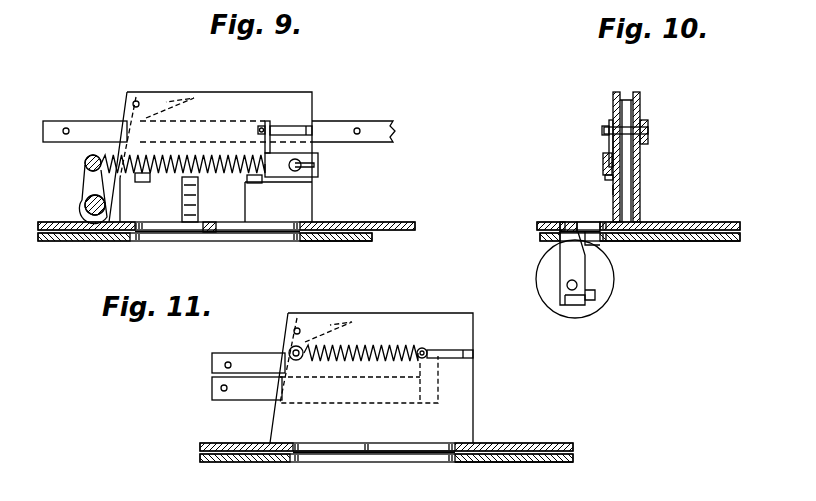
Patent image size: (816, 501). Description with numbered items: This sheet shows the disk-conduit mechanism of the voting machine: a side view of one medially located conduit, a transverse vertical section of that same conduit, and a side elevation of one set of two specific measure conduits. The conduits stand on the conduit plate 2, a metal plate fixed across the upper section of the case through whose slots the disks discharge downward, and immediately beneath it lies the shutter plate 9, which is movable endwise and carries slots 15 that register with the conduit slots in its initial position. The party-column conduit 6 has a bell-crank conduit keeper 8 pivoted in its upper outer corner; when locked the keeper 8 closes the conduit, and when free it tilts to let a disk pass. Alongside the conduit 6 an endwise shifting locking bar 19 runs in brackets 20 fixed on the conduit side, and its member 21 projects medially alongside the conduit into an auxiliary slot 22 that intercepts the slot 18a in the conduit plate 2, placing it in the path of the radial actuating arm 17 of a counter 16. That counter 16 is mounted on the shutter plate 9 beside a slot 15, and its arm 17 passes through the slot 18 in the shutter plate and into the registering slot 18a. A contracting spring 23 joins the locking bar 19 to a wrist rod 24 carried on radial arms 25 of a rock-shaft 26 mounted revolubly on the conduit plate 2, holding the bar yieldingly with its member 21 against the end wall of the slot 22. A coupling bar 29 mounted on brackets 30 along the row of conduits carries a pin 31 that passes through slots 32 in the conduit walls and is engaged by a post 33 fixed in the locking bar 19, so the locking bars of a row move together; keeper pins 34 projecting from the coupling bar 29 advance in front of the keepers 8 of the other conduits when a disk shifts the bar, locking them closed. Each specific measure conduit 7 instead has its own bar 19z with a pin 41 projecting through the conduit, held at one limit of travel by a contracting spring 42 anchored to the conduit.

In FIG. 9, the conduit plate 2 is at (360, 222).
In FIG. 10, the conduit plate 2 is at (686, 222).
In FIG. 11, the conduit plate 2 is at (520, 443).
In FIG. 9, the conduit 6 is at (222, 98).
In FIG. 10, the conduit 6 is at (614, 92).
In FIG. 11, the conduit 6 is at (428, 443).
In FIG. 11, the specific measure conduit 7 is at (430, 313).
In FIG. 9, the conduit keeper 8 is at (163, 97).
In FIG. 11, the conduit keeper 8 is at (331, 322).
In FIG. 9, the shutter plate 9 is at (355, 242).
In FIG. 10, the shutter plate 9 is at (698, 242).
In FIG. 11, the shutter plate 9 is at (553, 462).
In FIG. 9, the slot 15 is at (273, 241).
In FIG. 10, the slot 15 is at (622, 240).
In FIG. 11, the slot 15 is at (428, 462).
In FIG. 10, the counter 16 is at (540, 280).
In FIG. 10, the radial actuating arm 17 is at (577, 263).
In FIG. 10, the slot 18 is at (605, 235).
In FIG. 9, the slot 18a is at (208, 234).
In FIG. 10, the slot 18a is at (580, 222).
In FIG. 9, the locking bar 19 is at (318, 166).
In FIG. 10, the locking bar 19 is at (603, 163).
In FIG. 11, the bar 19z is at (251, 360).
In FIG. 9, the bracket 20 is at (142, 182).
In FIG. 10, the bracket 20 is at (605, 177).
In FIG. 9, the member 21 is at (198, 200).
In FIG. 10, the member 21 is at (615, 192).
In FIG. 10, the auxiliary slot 22 is at (606, 226).
In FIG. 9, the contracting spring 23 is at (160, 163).
In FIG. 9, the wrist rod 24 is at (85, 162).
In FIG. 9, the radial arm 25 is at (84, 182).
In FIG. 9, the rock-shaft 26 is at (85, 205).
In FIG. 9, the coupling bar 29 is at (383, 120).
In FIG. 10, the coupling bar 29 is at (648, 129).
In FIG. 10, the bracket 30 is at (648, 138).
In FIG. 9, the pin 31 is at (259, 126).
In FIG. 10, the pin 31 is at (602, 128).
In FIG. 9, the slot 32 is at (293, 130).
In FIG. 11, the slot 32 is at (450, 350).
In FIG. 9, the post 33 is at (268, 121).
In FIG. 10, the post 33 is at (609, 140).
In FIG. 9, the keeper pin 34 is at (67, 128).
In FIG. 11, the pin 41 is at (422, 348).
In FIG. 11, the contracting spring 42 is at (385, 346).